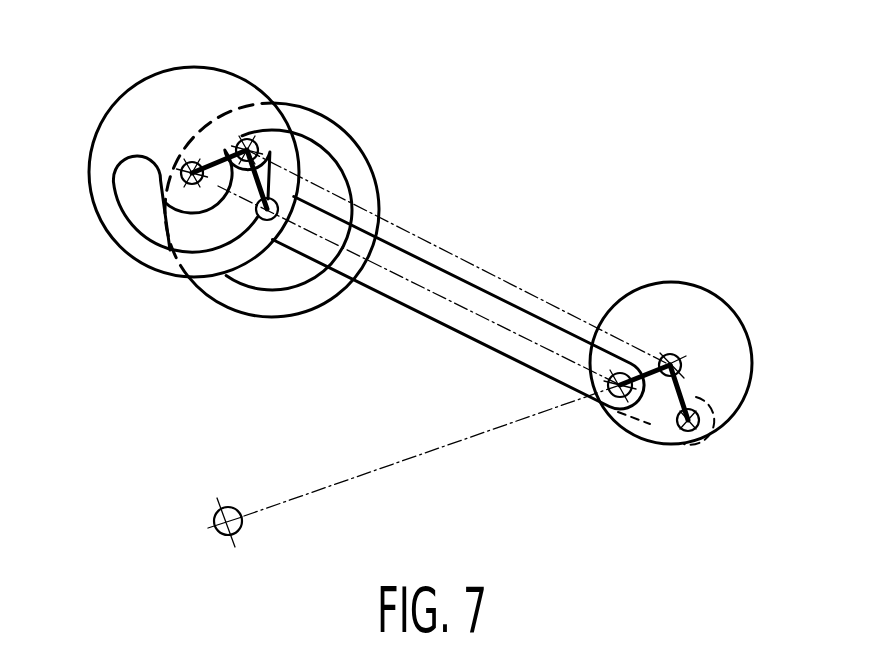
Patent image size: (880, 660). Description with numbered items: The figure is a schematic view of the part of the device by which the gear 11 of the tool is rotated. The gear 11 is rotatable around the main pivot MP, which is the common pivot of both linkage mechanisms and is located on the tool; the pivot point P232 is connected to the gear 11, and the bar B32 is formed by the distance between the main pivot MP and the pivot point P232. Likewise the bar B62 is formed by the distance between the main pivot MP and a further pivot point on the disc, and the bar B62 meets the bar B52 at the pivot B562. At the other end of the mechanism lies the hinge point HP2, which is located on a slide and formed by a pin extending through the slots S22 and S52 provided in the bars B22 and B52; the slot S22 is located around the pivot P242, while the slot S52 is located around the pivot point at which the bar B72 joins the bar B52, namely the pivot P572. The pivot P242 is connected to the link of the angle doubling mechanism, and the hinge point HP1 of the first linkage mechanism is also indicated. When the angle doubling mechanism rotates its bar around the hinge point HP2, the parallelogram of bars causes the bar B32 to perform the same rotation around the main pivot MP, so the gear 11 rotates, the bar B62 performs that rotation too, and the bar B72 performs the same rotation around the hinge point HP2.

The bar B52 is at (208, 92).
The bar B22 is at (287, 300).
The slot S52 is at (137, 198).
The pivot P572 is at (183, 163).
The bar B72 is at (212, 160).
The hinge point HP2 is at (250, 140).
The pivot P242 is at (258, 220).
The slot S22 is at (320, 186).
The gear 11 is at (703, 328).
The main pivot MP is at (675, 355).
The bar B62 is at (660, 355).
The bar B32 is at (685, 400).
The pivot B562 is at (620, 398).
The pivot point P232 is at (688, 431).
The hinge point HP1 is at (213, 520).